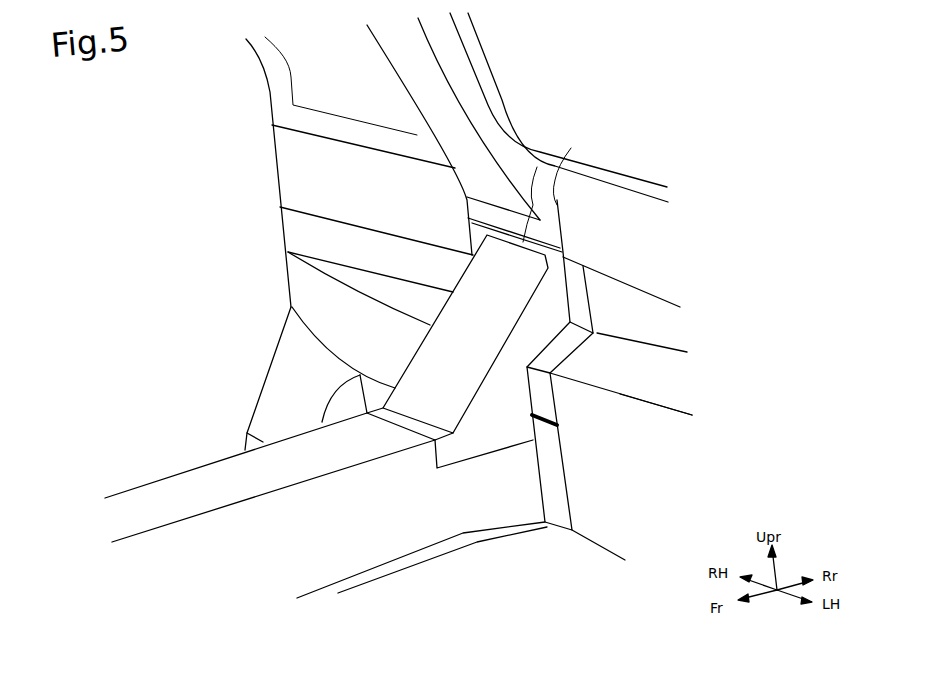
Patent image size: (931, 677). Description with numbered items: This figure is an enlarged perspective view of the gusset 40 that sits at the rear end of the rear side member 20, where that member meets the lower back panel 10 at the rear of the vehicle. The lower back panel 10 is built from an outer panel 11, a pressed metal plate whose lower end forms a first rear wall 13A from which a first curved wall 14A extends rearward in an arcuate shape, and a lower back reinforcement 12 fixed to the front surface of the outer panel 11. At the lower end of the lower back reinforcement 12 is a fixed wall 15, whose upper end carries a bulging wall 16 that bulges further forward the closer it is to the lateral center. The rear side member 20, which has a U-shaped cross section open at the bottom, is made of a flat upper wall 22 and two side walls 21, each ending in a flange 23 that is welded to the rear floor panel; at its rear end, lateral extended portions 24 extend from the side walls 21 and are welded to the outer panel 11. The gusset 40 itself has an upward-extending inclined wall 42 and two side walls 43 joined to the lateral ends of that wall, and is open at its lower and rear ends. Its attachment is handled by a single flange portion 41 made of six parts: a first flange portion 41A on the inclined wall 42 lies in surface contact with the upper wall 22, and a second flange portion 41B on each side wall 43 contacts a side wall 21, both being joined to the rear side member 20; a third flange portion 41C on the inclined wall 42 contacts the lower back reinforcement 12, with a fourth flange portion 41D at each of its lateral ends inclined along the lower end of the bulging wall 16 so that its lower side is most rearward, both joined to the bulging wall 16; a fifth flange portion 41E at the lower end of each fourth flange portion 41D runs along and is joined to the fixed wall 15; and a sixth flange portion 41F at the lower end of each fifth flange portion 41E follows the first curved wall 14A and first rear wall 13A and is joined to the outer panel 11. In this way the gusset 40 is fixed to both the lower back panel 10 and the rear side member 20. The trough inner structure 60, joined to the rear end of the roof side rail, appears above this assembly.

The lower back panel 10 is at (707, 177).
The outer panel 11 is at (673, 378).
The lower back reinforcement 12 is at (660, 215).
The first rear wall 13A is at (618, 490).
The first curved wall 14A is at (680, 400).
The fixed wall 15 is at (670, 327).
The bulging wall 16 is at (665, 267).
The rear side member 20 is at (183, 442).
The side wall 21 is at (270, 572).
The upper wall 22 is at (218, 495).
The flange 23 is at (393, 567).
The lateral extended portion 24 is at (550, 458).
The gusset 40 is at (330, 305).
The flange portion 41 is at (403, 417).
The first flange portion 41A is at (382, 408).
The second flange portion 41B is at (447, 450).
The third flange portion 41C is at (562, 185).
The fourth flange portion 41D is at (478, 235).
The fifth flange portion 41E is at (580, 303).
The sixth flange portion 41F is at (540, 395).
The inclined wall 42 is at (472, 283).
The side wall 43 is at (502, 395).
The trough inner structure 60 is at (453, 57).